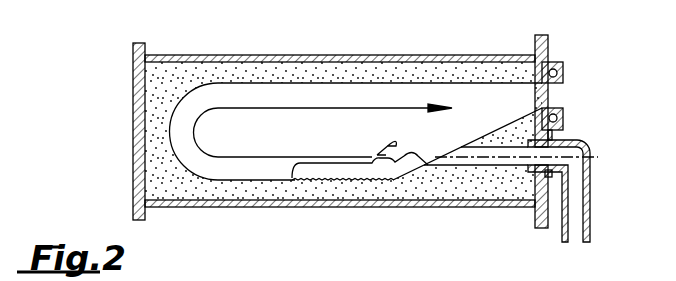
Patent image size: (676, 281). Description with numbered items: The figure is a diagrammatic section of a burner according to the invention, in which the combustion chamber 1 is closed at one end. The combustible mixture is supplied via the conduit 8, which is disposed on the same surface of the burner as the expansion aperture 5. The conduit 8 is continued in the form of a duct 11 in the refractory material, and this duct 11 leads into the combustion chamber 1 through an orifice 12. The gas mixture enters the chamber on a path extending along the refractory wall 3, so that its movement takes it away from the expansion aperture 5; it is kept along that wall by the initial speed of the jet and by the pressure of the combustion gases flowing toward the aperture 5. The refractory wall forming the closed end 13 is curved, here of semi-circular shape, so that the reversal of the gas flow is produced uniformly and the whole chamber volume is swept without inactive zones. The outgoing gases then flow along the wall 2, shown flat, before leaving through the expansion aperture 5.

The combustion chamber 1 is at (338, 144).
The wall 2 is at (318, 67).
The refractory wall 3 is at (323, 188).
The expansion aperture 5 is at (558, 92).
The conduit 8 is at (590, 187).
The duct 11 is at (487, 153).
The orifice 12 is at (443, 157).
The closed end 13 is at (152, 130).